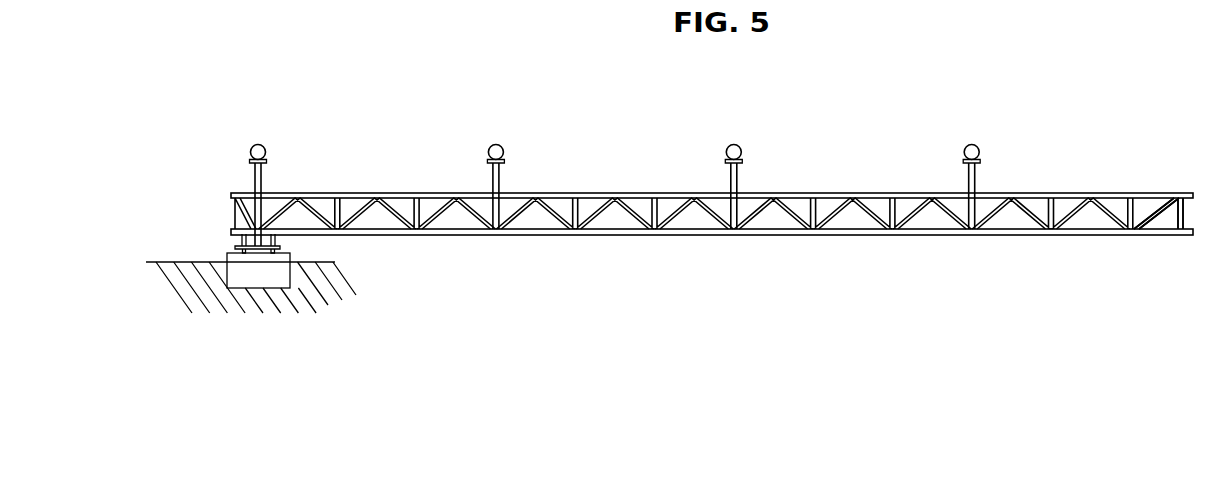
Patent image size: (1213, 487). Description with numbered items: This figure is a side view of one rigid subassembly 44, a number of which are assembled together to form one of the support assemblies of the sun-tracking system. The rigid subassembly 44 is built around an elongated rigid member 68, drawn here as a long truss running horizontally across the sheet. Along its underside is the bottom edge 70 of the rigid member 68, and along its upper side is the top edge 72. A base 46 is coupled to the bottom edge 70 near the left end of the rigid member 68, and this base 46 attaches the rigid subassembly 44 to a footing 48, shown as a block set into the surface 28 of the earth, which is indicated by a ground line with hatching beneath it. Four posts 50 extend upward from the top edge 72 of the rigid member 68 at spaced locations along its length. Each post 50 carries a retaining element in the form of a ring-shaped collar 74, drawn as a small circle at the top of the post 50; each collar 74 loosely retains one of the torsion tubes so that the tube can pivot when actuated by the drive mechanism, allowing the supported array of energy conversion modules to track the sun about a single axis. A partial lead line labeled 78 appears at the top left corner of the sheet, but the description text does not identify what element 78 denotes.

The surface 28 is at (214, 261).
The rigid subassembly 44 is at (817, 301).
The base 46 is at (283, 240).
The footing 48 is at (257, 282).
The post 50 is at (254, 175).
The elongated rigid member 68 is at (1177, 192).
The bottom edge 70 is at (523, 236).
The top edge 72 is at (548, 192).
The ring-shaped collar 74 is at (253, 146).
The adjacent structure 78 is at (118, 0).